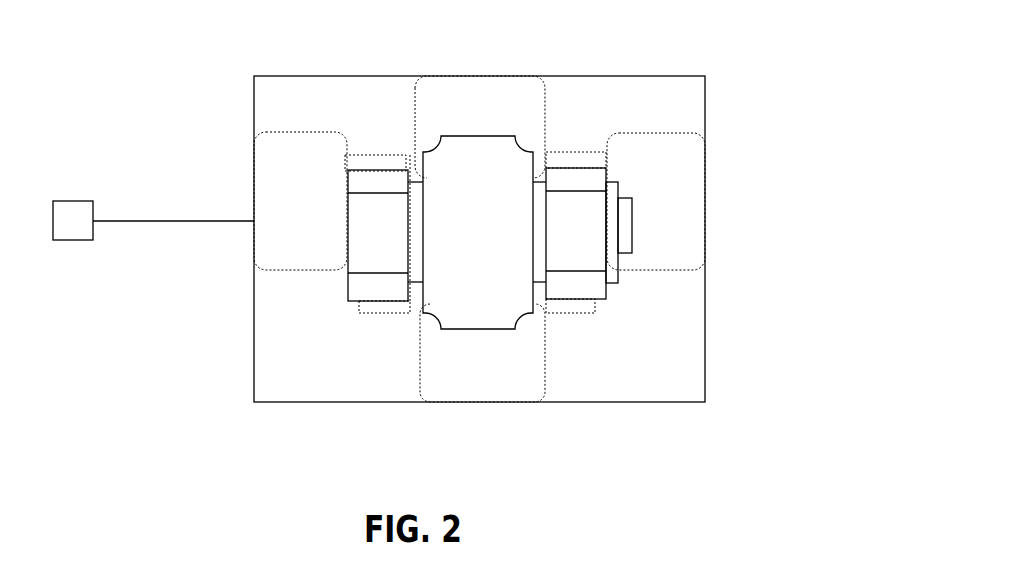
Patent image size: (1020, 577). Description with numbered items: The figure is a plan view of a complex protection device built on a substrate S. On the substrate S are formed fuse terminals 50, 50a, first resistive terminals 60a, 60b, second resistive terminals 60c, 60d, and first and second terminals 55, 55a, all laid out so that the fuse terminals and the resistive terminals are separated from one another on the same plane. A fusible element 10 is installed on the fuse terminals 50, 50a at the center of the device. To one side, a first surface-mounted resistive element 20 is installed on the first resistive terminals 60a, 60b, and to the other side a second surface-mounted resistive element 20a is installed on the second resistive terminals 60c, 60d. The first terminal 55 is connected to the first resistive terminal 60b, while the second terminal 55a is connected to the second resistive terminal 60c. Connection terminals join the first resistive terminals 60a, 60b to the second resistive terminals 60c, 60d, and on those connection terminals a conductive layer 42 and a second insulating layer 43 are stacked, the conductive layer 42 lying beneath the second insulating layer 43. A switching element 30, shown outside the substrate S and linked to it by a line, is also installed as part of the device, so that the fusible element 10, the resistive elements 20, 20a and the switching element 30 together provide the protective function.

The fusible element 10 is at (485, 292).
The first surface-mounted resistive element 20 is at (600, 263).
The second surface-mounted resistive element 20a is at (358, 257).
The switching element 30 is at (153, 220).
The conductive layer 42 is at (623, 237).
The second insulating layer 43 is at (547, 186).
The fuse terminal 50 is at (444, 392).
The fuse terminal 50a is at (504, 93).
The first terminal 55 is at (687, 160).
The second terminal 55a is at (259, 158).
The first resistive terminal 60a is at (577, 307).
The first resistive terminal 60b is at (573, 160).
The second resistive terminal 60c is at (385, 307).
The second resistive terminal 60d is at (380, 162).
The substrate S is at (705, 350).